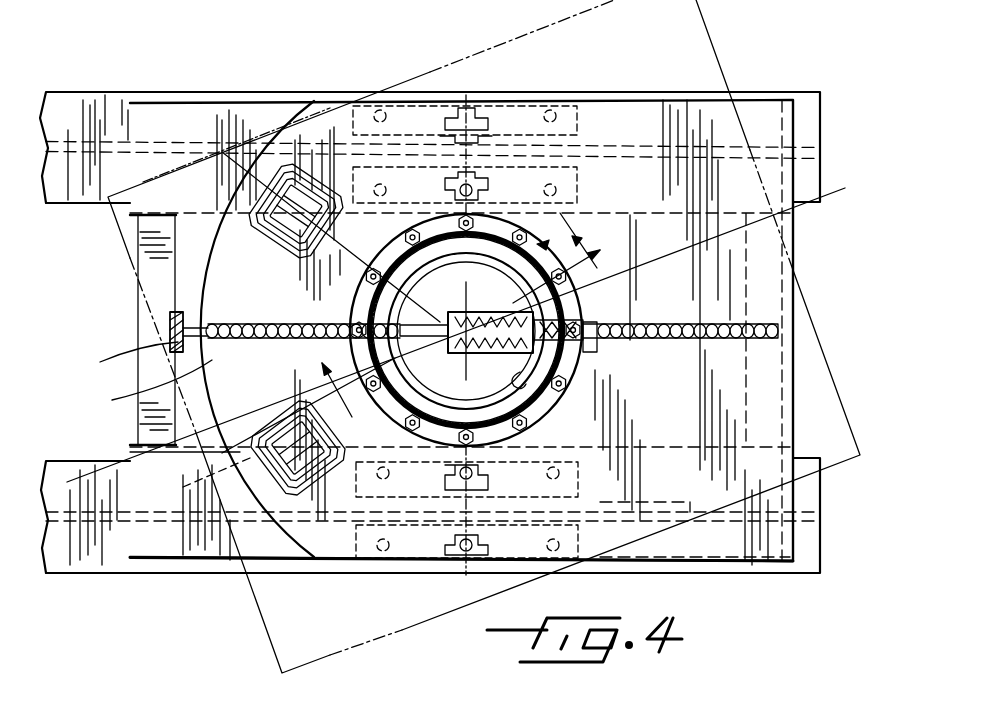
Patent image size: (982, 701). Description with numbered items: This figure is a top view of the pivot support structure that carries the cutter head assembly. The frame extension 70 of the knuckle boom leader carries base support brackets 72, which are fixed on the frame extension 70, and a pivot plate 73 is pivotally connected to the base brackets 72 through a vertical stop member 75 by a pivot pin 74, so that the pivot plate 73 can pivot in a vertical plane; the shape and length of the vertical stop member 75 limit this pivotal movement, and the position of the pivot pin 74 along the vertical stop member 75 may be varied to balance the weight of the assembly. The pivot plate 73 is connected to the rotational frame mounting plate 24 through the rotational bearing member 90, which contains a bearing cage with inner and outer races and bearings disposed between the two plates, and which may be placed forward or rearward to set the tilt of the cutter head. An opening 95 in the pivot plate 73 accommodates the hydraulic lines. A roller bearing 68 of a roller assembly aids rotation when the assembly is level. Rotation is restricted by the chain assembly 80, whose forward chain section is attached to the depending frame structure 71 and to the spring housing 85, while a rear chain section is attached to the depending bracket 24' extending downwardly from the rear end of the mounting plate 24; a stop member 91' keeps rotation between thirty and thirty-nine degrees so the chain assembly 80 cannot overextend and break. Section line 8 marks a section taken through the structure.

The frame extension 70 is at (84, 95).
The depending frame structure 71 is at (125, 292).
The base support brackets 72 is at (588, 112).
The pivot plate 73 is at (114, 400).
The pivot pin 74 is at (458, 115).
The vertical stop member 75 is at (637, 147).
The chain assembly 80 is at (418, 318).
The spring housing 85 is at (492, 306).
The rotational bearing member 90 is at (578, 228).
The opening 95 is at (525, 385).
The roller bearing 68 is at (278, 256).
The stop member 91' is at (292, 327).
The rotational frame mounting plate 24 is at (484, 336).
The depending bracket 24' is at (193, 242).
The section line 8- 8 is at (456, 335).